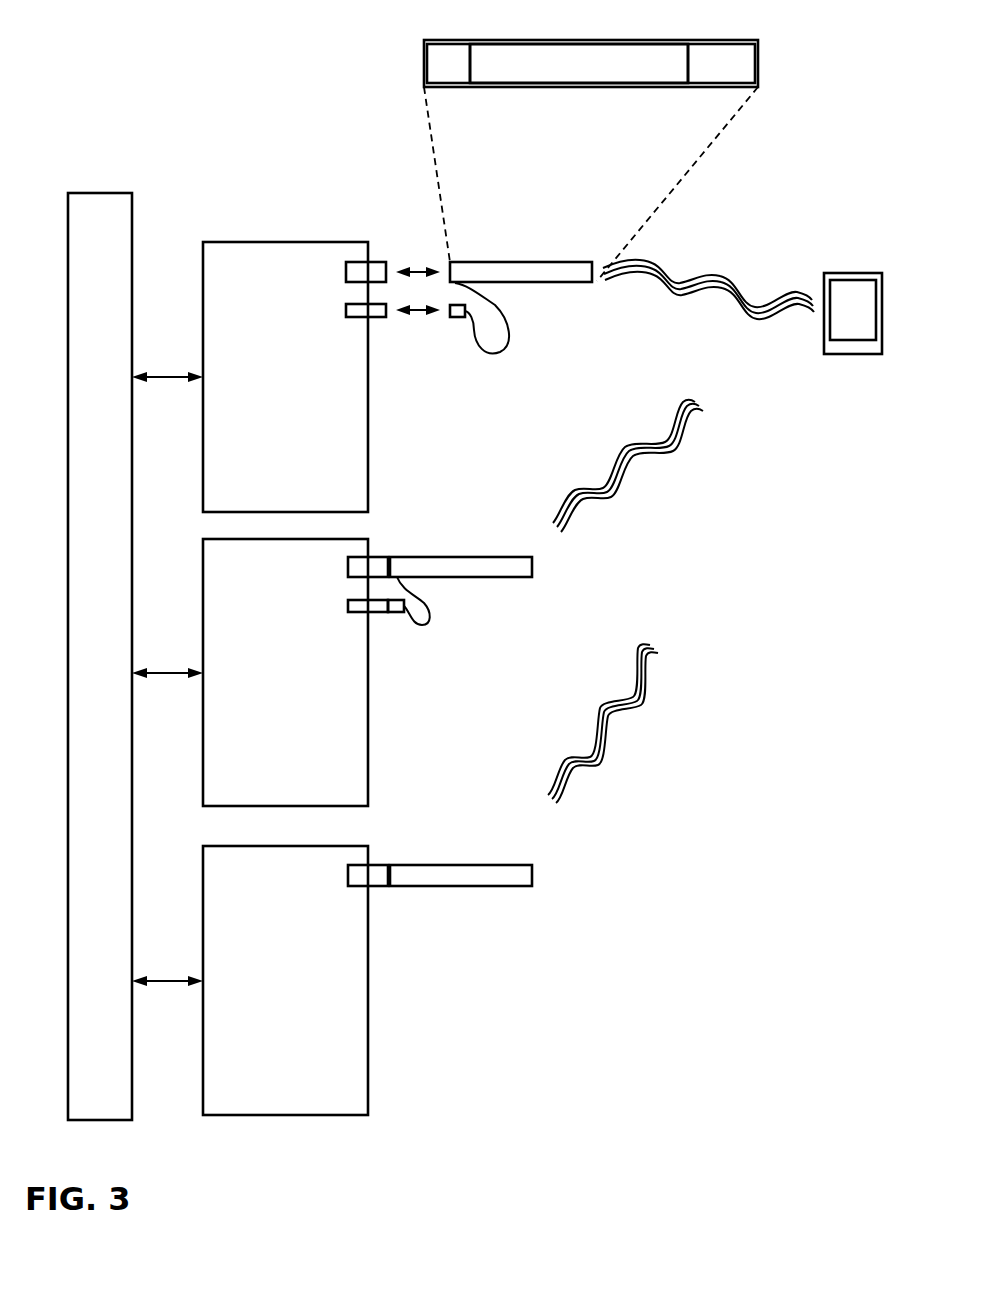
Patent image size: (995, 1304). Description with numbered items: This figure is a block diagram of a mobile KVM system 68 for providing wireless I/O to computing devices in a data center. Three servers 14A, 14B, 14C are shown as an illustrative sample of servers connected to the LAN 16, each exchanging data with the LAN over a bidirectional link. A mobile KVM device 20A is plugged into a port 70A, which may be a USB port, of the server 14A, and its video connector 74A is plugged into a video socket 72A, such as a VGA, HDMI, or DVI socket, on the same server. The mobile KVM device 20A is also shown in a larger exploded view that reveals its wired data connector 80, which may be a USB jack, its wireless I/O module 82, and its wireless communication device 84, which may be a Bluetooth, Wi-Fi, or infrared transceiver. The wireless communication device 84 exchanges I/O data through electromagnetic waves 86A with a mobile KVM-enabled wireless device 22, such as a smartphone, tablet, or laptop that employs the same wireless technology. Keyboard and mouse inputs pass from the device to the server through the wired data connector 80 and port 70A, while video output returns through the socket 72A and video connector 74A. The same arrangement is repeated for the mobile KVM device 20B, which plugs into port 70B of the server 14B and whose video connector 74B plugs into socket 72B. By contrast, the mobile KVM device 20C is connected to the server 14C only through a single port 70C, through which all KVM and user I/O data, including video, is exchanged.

The mobile KVM system 68 is at (148, 55).
The LAN 16 is at (88, 683).
The server 14A is at (266, 401).
The server 14B is at (266, 697).
The server 14C is at (266, 1005).
The port 70A is at (388, 239).
The port 70B is at (389, 532).
The port 70C is at (389, 841).
The socket 72A is at (383, 347).
The socket 72B is at (379, 660).
The video connector 74A is at (475, 336).
The video connector 74B is at (413, 635).
The mobile KVM device 20A is at (521, 239).
The mobile KVM device 20B is at (461, 532).
The mobile KVM device 20C is at (461, 841).
The wired data connector 80 is at (436, 75).
The wireless I/O module 82 is at (576, 75).
The wireless communication device 84 is at (707, 75).
The electromagnetic waves 86A is at (708, 261).
The mobile KVM-enabled wireless device 22 is at (842, 279).